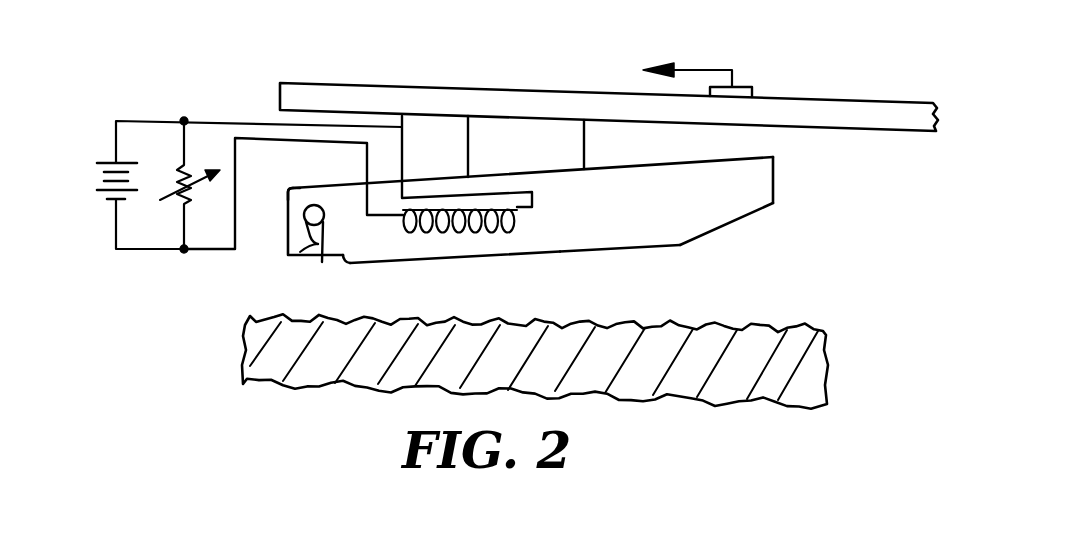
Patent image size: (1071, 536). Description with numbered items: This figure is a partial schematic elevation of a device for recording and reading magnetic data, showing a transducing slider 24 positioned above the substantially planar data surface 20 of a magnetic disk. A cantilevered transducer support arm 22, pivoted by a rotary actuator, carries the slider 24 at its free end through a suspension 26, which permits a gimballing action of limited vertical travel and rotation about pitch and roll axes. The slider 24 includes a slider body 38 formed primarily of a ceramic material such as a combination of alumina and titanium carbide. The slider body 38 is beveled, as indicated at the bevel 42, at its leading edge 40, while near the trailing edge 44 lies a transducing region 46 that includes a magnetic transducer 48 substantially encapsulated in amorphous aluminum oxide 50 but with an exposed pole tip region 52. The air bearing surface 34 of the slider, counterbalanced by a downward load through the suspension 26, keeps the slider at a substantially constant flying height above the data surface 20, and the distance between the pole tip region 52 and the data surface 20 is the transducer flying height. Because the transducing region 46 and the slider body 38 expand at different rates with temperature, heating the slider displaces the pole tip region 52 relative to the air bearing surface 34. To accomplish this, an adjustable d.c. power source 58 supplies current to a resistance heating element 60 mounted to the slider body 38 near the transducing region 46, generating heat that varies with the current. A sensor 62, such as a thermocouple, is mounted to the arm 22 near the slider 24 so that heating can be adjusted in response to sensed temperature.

The data surface 20 is at (750, 328).
The transducer support arm 22 is at (402, 92).
The slider 24 is at (753, 170).
The suspension 26 is at (567, 145).
The air bearing surface 34 is at (638, 248).
The slider body 38 is at (563, 240).
The leading edge 40 is at (773, 190).
The bevel 42 is at (732, 222).
The trailing edge 44 is at (288, 232).
The transducing region 46 is at (333, 237).
The magnetic transducer 48 is at (300, 252).
The amorphous aluminum oxide 50 is at (303, 200).
The pole tip region 52 is at (322, 262).
The d.c. power source 58 is at (115, 220).
The resistance heating element 60 is at (483, 228).
The sensor 62 is at (743, 92).